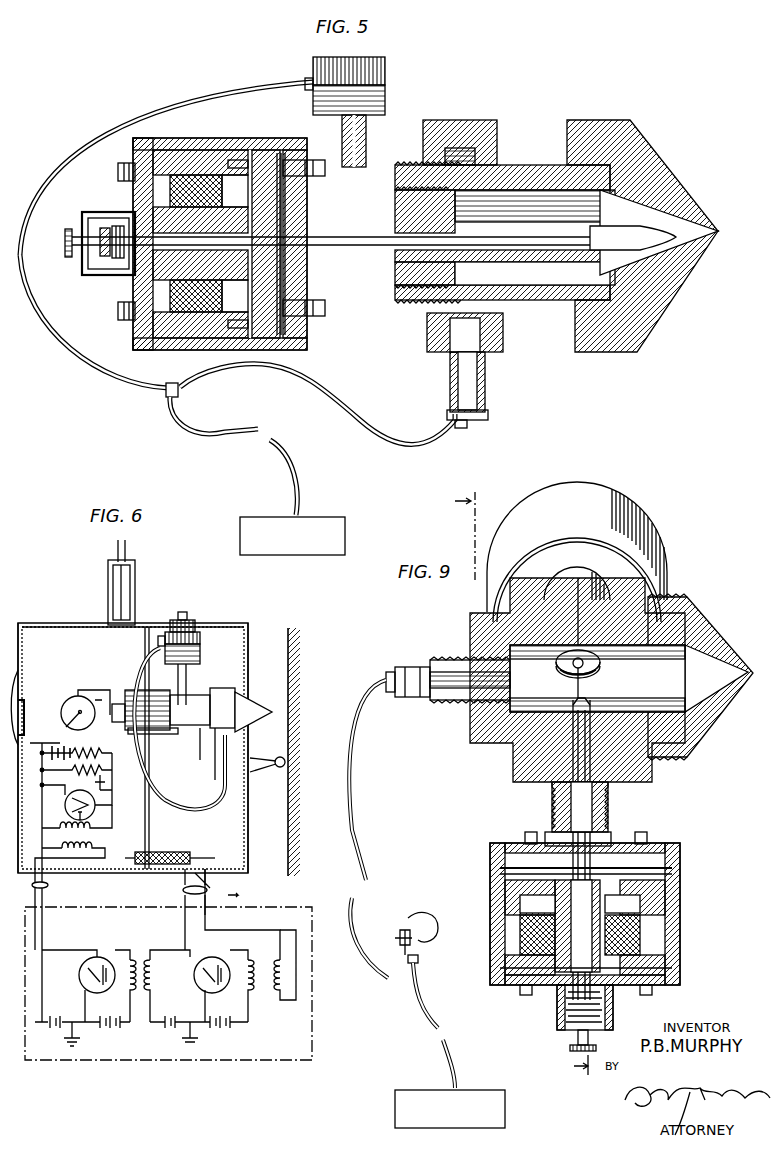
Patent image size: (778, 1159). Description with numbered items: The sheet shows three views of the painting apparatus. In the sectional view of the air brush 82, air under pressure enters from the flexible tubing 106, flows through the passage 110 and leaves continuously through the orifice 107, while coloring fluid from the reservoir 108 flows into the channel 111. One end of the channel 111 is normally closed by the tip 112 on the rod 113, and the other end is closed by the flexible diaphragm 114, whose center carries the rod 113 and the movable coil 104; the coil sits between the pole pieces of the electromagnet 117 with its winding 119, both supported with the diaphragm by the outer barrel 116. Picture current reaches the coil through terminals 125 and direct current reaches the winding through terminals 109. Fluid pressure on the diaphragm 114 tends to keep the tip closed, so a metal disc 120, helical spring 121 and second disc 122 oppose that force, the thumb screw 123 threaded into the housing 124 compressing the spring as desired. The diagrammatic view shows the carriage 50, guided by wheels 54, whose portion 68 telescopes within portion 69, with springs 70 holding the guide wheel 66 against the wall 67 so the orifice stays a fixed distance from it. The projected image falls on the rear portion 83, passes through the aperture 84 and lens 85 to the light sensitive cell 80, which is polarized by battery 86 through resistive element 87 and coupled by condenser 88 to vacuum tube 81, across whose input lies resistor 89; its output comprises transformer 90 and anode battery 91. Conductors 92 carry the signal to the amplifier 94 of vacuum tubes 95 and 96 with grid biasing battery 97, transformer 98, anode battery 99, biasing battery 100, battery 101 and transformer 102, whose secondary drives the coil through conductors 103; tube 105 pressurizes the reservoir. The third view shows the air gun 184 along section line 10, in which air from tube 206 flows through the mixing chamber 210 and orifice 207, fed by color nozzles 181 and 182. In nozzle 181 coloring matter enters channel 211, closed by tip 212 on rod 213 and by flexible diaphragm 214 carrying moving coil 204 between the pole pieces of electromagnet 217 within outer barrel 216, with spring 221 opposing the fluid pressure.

In FIG. 9, the section line 10 is at (512, 783).
In FIG. 6, the carriage 50 is at (133, 748).
In FIG. 6, the wheels 54 is at (135, 565).
In FIG. 6, the guide wheel 66 is at (279, 768).
In FIG. 6, the wall 67 is at (287, 836).
In FIG. 6, the carriage portion 68 is at (232, 626).
In FIG. 6, the carriage portion 69 is at (62, 623).
In FIG. 6, the springs 70 is at (172, 852).
In FIG. 6, the light sensitive cell 80 is at (78, 696).
In FIG. 6, the vacuum tube 81 is at (96, 804).
In FIG. 6, the air brush 82 is at (196, 695).
In FIG. 6, the rear portion 83 is at (18, 623).
In FIG. 6, the aperture 84 is at (18, 675).
In FIG. 6, the lens 85 is at (22, 705).
In FIG. 6, the polarizing battery 86 is at (52, 742).
In FIG. 6, the resistive element 87 is at (105, 757).
In FIG. 6, the condenser 88 is at (104, 772).
In FIG. 6, the input resistor 89 is at (106, 786).
In FIG. 6, the transformer 90 is at (100, 832).
In FIG. 6, the anode battery 91 is at (58, 846).
In FIG. 6, the pair of conductors 92 is at (48, 886).
In FIG. 6, the amplifier 94 is at (268, 1058).
In FIG. 6, the vacuum tube 95 is at (102, 958).
In FIG. 6, the vacuum tube 96 is at (218, 958).
In FIG. 6, the grid biasing battery 97 is at (54, 1016).
In FIG. 6, the transformer 98 is at (146, 958).
In FIG. 6, the anode battery 99 is at (106, 1028).
In FIG. 6, the biasing battery 100 is at (165, 1028).
In FIG. 6, the battery 101 is at (220, 1028).
In FIG. 6, the transformer 102 is at (266, 988).
In FIG. 6, the pair of conductors 103 is at (183, 888).
In FIG. 5, the movable coil 104 is at (243, 150).
In FIG. 6, the tube 105 is at (185, 614).
In FIG. 5, the flexible tubing 106 is at (340, 413).
In FIG. 6, the flexible tubing 106 is at (212, 800).
In FIG. 5, the orifice 107 is at (720, 231).
In FIG. 6, the orifice 107 is at (270, 705).
In FIG. 5, the reservoir 108 is at (387, 84).
In FIG. 6, the reservoir 108 is at (200, 640).
In FIG. 5, the terminals 109 is at (118, 171).
In FIG. 5, the passage 110 is at (530, 302).
In FIG. 5, the channel 111 is at (392, 282).
In FIG. 5, the tip 112 is at (632, 240).
In FIG. 5, the rod 113 is at (325, 240).
In FIG. 5, the flexible diaphragm 114 is at (306, 298).
In FIG. 5, the outer barrel 116 is at (211, 150).
In FIG. 6, the outer barrel 116 is at (154, 735).
In FIG. 5, the electromagnet 117 is at (177, 325).
In FIG. 5, the winding 119 is at (190, 175).
In FIG. 9, the winding 119 is at (640, 935).
In FIG. 5, the metal disc 120 is at (112, 258).
In FIG. 5, the helical spring 121 is at (109, 262).
In FIG. 5, the second disc 122 is at (105, 226).
In FIG. 5, the thumb screw 123 is at (65, 245).
In FIG. 5, the housing 124 is at (85, 274).
In FIG. 5, the terminals 125 is at (315, 159).
In FIG. 9, the color nozzle 181 is at (552, 814).
In FIG. 9, the color nozzle 182 is at (665, 560).
In FIG. 9, the air gun 184 is at (513, 770).
In FIG. 9, the moving coil 204 is at (520, 905).
In FIG. 9, the tube 206 is at (440, 1022).
In FIG. 9, the orifice 207 is at (752, 676).
In FIG. 9, the mixing chamber 210 is at (670, 690).
In FIG. 9, the channel 211 is at (600, 822).
In FIG. 9, the tip 212 is at (582, 672).
In FIG. 9, the rod 213 is at (612, 810).
In FIG. 9, the flexible diaphragm 214 is at (678, 883).
In FIG. 9, the outer barrel 216 is at (660, 970).
In FIG. 9, the electromagnet 217 is at (660, 916).
In FIG. 9, the spring 221 is at (600, 1010).